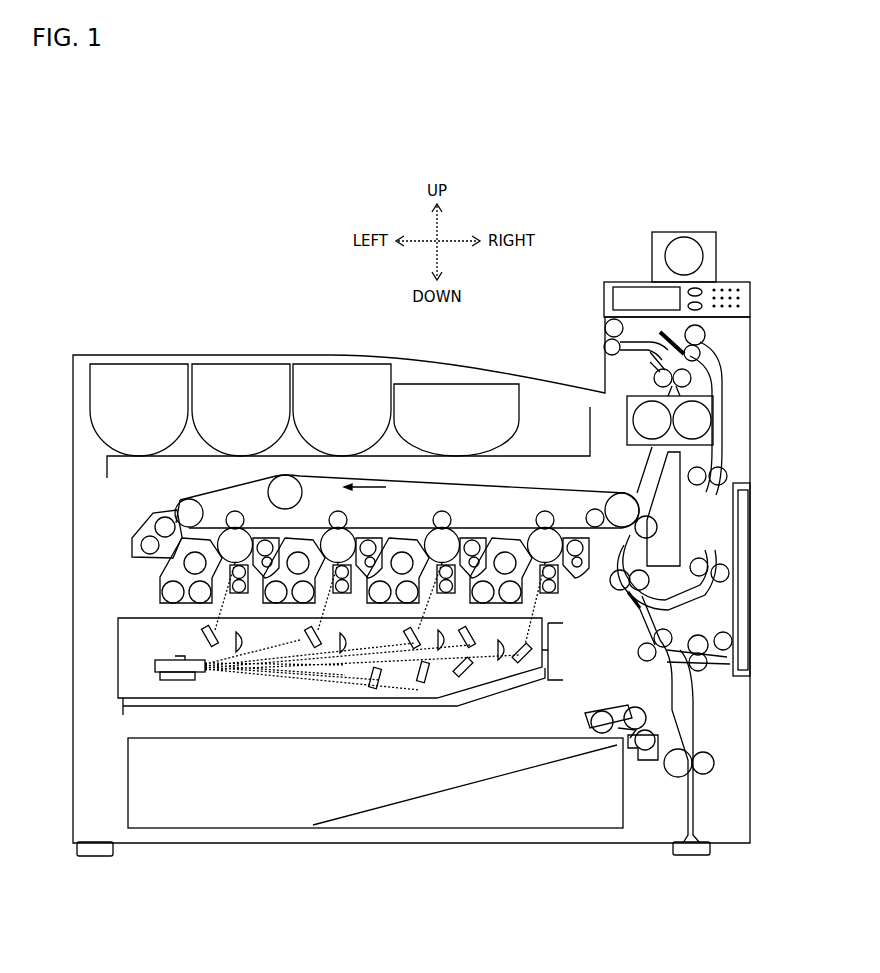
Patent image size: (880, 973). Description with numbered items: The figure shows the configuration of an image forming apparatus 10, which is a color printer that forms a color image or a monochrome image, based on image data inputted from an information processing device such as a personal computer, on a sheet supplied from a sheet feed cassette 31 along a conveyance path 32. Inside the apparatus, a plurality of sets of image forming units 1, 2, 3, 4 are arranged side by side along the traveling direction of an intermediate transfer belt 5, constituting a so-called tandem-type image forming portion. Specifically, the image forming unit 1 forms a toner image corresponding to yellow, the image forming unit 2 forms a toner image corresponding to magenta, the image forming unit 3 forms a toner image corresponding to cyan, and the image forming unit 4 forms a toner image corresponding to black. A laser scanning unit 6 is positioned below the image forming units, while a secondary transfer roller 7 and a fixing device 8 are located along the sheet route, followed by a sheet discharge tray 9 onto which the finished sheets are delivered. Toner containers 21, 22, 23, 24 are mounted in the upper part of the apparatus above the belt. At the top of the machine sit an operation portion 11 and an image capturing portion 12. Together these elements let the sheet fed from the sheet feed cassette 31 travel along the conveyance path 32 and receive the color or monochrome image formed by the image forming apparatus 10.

The image forming apparatus 10 is at (46, 350).
The toner container 21 is at (110, 362).
The toner container 22 is at (212, 362).
The toner container 23 is at (307, 362).
The toner container 24 is at (487, 382).
The sheet discharge tray 9 is at (536, 381).
The operation portion 11 is at (603, 293).
The image capturing portion 12 is at (717, 242).
The fixing device 8 is at (714, 410).
The intermediate transfer belt 5 is at (203, 507).
The image forming unit 1 is at (256, 526).
The image forming unit 2 is at (360, 526).
The image forming unit 3 is at (462, 526).
The image forming unit 4 is at (562, 522).
The laser scanning unit 6 is at (118, 643).
The secondary transfer roller 7 is at (654, 540).
The sheet feed cassette 31 is at (128, 783).
The conveyance path 32 is at (640, 638).